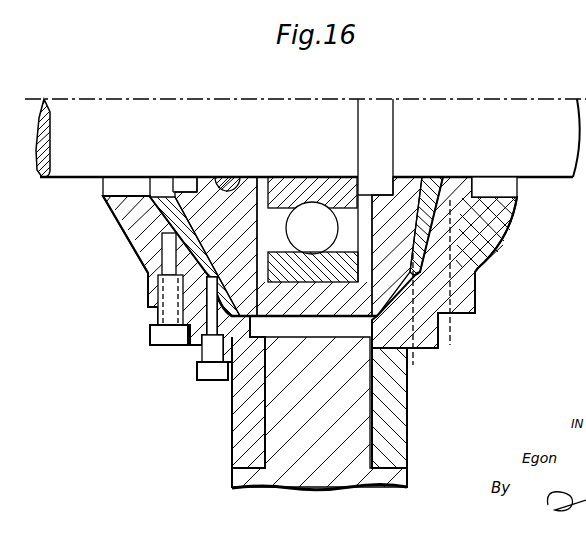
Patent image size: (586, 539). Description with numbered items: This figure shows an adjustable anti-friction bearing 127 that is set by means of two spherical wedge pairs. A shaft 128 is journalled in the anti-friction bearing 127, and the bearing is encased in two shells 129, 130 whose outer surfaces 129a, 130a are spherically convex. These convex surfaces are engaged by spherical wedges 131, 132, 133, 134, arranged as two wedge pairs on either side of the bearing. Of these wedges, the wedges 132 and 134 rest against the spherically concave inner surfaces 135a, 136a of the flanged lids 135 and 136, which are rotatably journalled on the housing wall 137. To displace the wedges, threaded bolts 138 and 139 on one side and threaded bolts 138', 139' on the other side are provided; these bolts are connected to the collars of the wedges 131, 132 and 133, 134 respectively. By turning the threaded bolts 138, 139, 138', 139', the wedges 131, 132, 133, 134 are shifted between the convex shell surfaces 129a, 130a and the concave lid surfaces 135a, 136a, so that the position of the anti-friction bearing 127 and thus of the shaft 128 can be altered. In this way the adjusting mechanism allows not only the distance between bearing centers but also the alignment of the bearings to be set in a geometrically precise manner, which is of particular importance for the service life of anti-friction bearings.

The anti-friction bearing 127 is at (310, 176).
The shaft 128 is at (420, 118).
The shell 129 is at (160, 258).
The outer surface of shell 129a is at (165, 288).
The shell 130 is at (413, 192).
The outer surface of shell 130a is at (452, 212).
The spherical wedge 131 is at (238, 222).
The spherical wedge 132 is at (166, 205).
The spherical wedge 133 is at (458, 195).
The spherical wedge 134 is at (505, 200).
The flanged lid 135 is at (240, 408).
The inner surface of flanged lid 135a is at (132, 216).
The flanged lid 136 is at (390, 413).
The inner surface of flanged lid 136a is at (485, 255).
The housing wall 137 is at (262, 476).
The threaded bolt 138 is at (142, 337).
The threaded bolt 138' is at (488, 272).
The threaded bolt 139 is at (184, 332).
The threaded bolt 139' is at (453, 309).